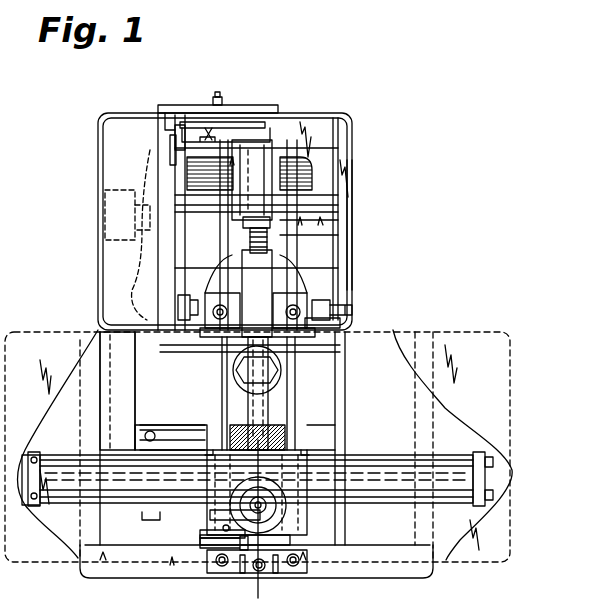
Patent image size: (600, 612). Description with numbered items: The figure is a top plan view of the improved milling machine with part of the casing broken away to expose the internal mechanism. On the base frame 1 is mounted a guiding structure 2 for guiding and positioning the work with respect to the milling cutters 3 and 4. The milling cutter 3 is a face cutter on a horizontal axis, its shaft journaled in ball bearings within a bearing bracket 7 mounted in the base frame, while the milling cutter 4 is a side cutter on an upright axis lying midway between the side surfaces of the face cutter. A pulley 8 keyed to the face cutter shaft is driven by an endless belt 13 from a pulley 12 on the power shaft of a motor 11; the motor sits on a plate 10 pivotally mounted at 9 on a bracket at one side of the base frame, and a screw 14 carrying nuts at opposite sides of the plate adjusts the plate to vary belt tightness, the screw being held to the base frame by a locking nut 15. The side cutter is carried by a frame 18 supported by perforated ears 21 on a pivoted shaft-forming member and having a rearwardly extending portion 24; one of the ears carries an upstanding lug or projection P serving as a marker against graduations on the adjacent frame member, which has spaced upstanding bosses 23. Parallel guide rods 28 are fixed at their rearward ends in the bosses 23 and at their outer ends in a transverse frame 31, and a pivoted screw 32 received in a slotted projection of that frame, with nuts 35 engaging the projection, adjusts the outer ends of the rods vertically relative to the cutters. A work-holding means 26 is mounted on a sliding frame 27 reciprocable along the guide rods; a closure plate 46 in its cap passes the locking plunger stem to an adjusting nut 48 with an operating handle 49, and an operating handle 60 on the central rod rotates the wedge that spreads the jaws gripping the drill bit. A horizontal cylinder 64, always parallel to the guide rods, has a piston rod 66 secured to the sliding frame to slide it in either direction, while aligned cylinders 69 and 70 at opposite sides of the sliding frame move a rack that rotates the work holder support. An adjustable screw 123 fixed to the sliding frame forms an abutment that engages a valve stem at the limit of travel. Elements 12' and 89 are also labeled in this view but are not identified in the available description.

The base plate 1 is at (395, 333).
The guiding structure 2 is at (307, 397).
The milling cutter 3 is at (255, 60).
The milling cutter 4 is at (238, 378).
The bearing bracket 7 is at (162, 445).
The pulley 8 is at (105, 440).
The pivot 9 is at (172, 143).
The plate 10 is at (197, 143).
The motor 11 is at (300, 178).
The pulley 12 is at (100, 211).
The switch lever 12' is at (205, 359).
The endless belt 13 is at (122, 380).
The screw 14 is at (210, 135).
The locking nut 15 is at (218, 96).
The frame 18 is at (310, 270).
The perforated ears 21 is at (178, 306).
The upstanding bosses 23 is at (210, 330).
The rearwardly extending portion 24 is at (318, 280).
The work-holding means 26 is at (305, 530).
The sliding frame 27 is at (178, 510).
The guide rods 28 is at (236, 362).
The transverse frame 31 is at (205, 545).
The screw 32 is at (258, 560).
The nuts 35 is at (282, 575).
The closure plate 46 is at (200, 533).
The adjusting nut 48 is at (236, 535).
The operating handle 49 is at (200, 545).
The operating handle 60 is at (318, 512).
The horizontal cylinder 64 is at (285, 150).
The piston rod 66 is at (285, 410).
The cylinder 69 is at (62, 458).
The cylinder 70 is at (395, 460).
The collar 89 is at (288, 432).
The adjustable screw 123 is at (285, 452).
The upstanding lug or projection P is at (392, 275).